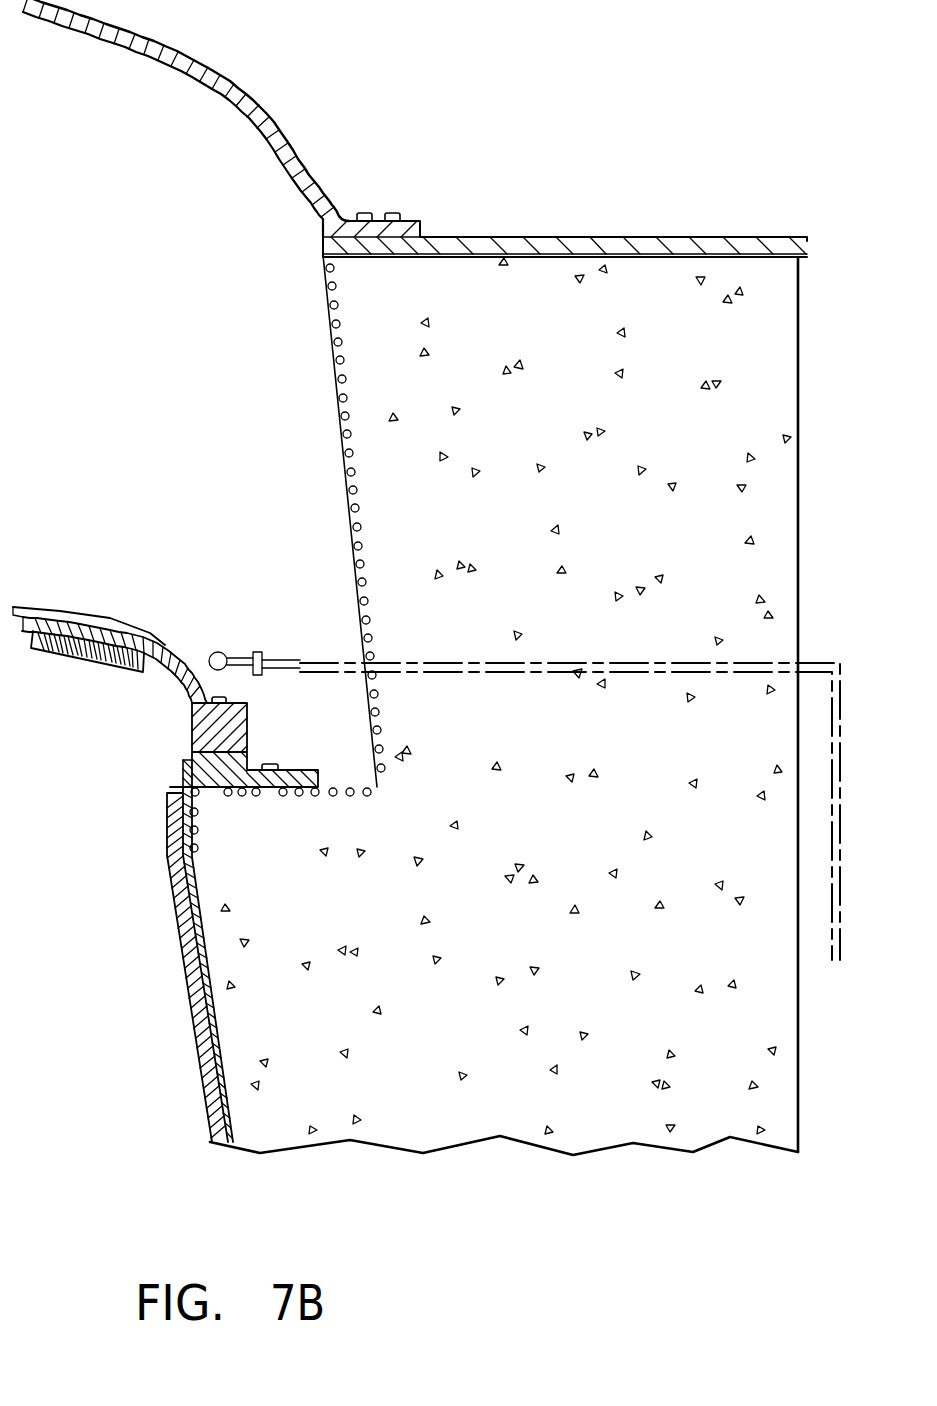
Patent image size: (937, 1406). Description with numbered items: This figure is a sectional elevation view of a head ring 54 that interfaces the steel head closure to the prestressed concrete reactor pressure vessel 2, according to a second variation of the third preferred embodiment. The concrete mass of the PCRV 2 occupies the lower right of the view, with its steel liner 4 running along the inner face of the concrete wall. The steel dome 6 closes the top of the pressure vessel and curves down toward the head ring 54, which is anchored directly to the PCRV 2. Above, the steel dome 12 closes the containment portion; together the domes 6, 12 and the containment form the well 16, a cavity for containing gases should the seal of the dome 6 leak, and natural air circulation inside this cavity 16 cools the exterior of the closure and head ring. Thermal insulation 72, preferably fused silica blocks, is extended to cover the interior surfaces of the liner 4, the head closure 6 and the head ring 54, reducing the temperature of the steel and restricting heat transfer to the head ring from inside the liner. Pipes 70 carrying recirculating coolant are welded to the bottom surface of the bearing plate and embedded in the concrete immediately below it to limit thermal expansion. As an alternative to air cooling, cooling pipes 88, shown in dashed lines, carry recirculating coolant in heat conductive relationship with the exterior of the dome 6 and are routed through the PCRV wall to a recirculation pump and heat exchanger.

The prestressed concrete reactor pressure vessel 2 is at (421, 1130).
The PCRV liner 4 is at (183, 775).
The steel dome 6 is at (88, 619).
The steel dome 12 is at (247, 98).
The well 16 is at (197, 389).
The head ring 54 is at (323, 682).
The pipes 70 is at (380, 738).
The thermal insulation 72 is at (98, 662).
The cooling pipes 88 is at (160, 633).